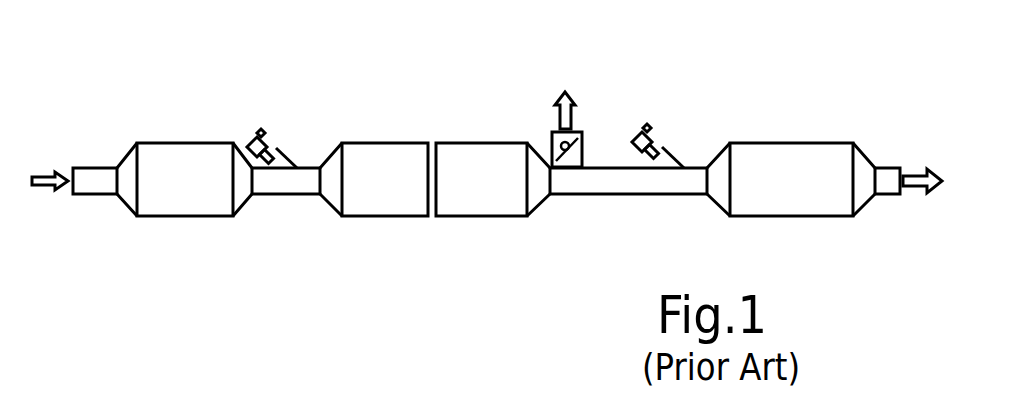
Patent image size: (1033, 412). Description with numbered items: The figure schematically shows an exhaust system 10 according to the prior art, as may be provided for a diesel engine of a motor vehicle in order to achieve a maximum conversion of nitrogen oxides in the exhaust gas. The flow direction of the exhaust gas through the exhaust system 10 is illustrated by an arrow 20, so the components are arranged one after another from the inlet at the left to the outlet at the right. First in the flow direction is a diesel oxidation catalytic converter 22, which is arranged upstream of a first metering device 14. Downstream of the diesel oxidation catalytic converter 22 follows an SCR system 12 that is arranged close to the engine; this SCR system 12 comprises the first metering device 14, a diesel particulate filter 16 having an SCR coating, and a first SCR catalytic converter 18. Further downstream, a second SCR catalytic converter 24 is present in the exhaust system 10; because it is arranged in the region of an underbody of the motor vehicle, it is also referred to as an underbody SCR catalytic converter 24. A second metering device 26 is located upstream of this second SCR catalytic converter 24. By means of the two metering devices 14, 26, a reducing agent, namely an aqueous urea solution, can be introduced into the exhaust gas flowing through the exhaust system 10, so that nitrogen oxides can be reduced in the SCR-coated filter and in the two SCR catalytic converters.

The exhaust system 10 is at (178, 88).
The SCR system 12 is at (315, 130).
The first metering device 14 is at (258, 129).
The diesel particulate filter 16 is at (390, 155).
The first SCR catalytic converter 18 is at (487, 155).
The arrow 20 is at (45, 190).
The diesel oxidation catalytic converter 22 is at (177, 202).
The second SCR catalytic converter 24 is at (797, 157).
The second metering device 26 is at (646, 127).